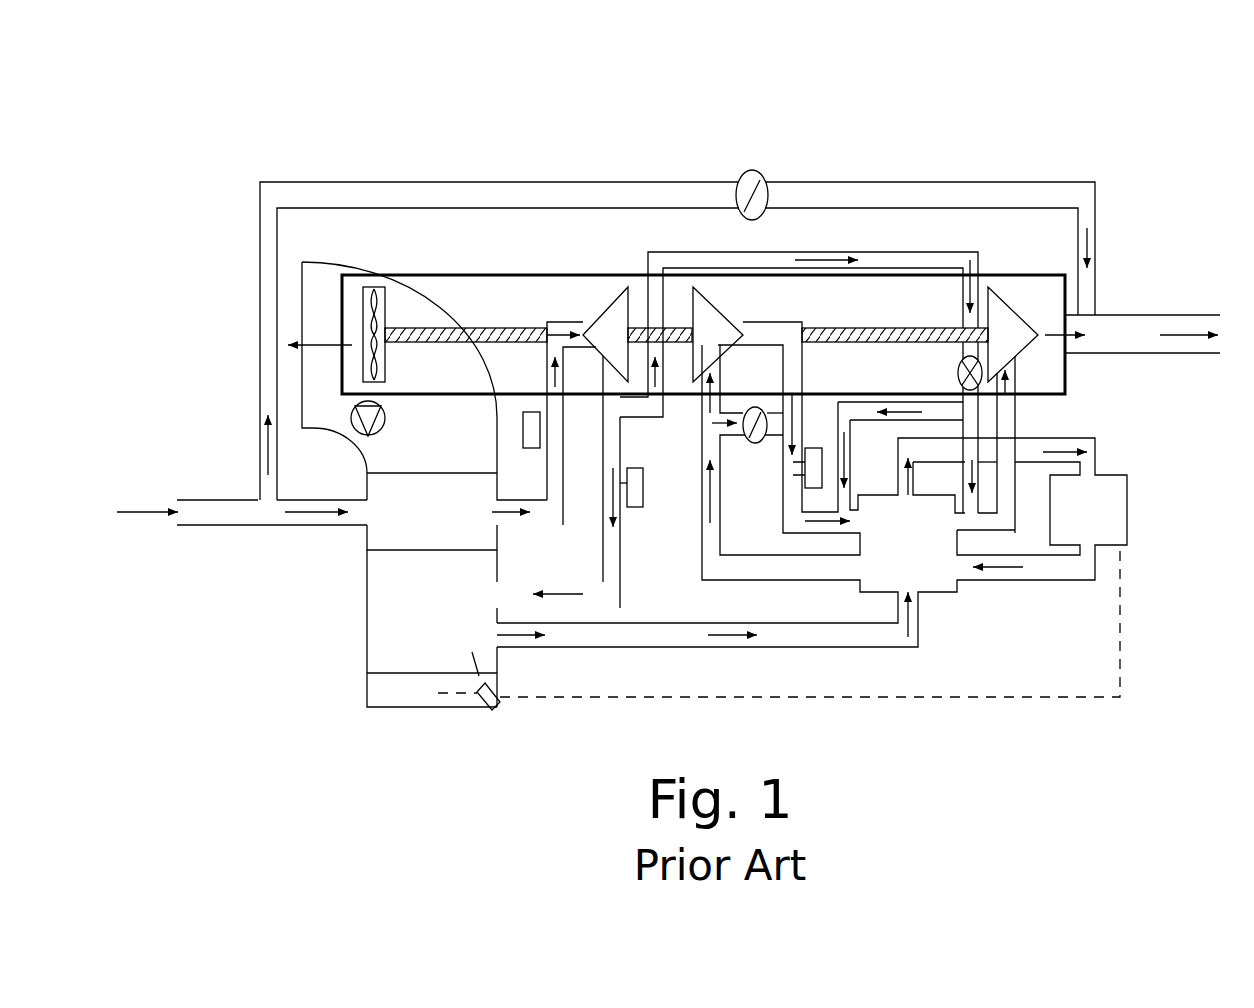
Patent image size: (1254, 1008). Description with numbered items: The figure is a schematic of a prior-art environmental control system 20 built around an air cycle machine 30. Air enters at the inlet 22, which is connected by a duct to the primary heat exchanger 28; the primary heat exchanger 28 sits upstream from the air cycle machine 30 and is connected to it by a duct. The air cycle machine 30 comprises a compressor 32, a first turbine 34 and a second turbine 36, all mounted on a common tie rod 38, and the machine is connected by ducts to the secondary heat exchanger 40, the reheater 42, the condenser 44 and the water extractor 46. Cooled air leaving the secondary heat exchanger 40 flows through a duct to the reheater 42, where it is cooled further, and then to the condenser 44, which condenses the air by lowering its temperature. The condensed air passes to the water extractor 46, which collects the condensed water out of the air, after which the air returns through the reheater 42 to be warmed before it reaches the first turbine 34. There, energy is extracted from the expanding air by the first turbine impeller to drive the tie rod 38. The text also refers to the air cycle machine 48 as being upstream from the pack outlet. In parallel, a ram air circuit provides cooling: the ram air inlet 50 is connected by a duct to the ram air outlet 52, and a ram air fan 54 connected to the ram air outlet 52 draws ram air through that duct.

The environmental control system 20 is at (208, 132).
The inlet 22 is at (178, 527).
The primary heat exchanger 28 is at (402, 508).
The air cycle machine 30 is at (553, 298).
The compressor 32 is at (612, 313).
The first turbine 34 is at (702, 315).
The second turbine 36 is at (998, 315).
The tie rod 38 is at (907, 327).
The secondary heat exchanger 40 is at (402, 602).
The reheater 42 is at (930, 575).
The condenser 44 is at (903, 522).
The water extractor 46 is at (1102, 505).
The air cycle machine 48 is at (1180, 322).
The ram air inlet 50 is at (417, 708).
The ram air outlet 52 is at (302, 298).
The ram air fan 54 is at (375, 283).